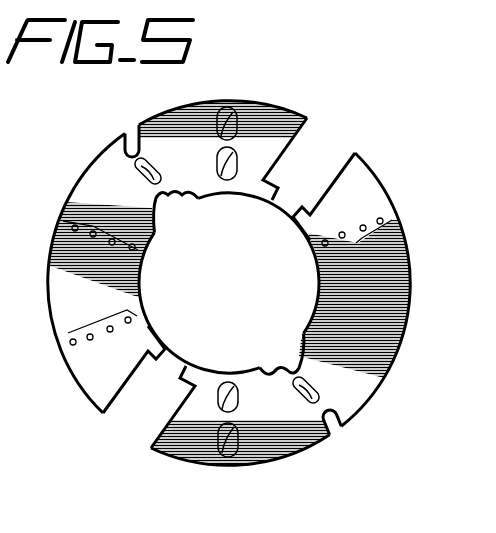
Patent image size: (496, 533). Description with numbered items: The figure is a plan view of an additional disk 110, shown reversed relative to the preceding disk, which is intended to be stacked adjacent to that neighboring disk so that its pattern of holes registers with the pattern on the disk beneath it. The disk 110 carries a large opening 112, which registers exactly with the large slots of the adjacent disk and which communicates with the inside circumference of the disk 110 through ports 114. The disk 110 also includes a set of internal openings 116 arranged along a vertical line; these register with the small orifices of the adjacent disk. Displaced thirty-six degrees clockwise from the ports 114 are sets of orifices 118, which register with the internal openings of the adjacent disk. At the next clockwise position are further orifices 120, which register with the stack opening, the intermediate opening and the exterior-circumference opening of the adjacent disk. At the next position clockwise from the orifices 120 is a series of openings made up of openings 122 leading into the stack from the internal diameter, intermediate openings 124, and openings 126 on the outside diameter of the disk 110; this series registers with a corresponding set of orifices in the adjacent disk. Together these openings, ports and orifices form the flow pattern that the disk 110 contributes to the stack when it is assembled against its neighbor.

The disk 110 is at (388, 189).
The large opening 112 is at (338, 174).
The ports 114 is at (293, 212).
The internal openings 116 is at (214, 186).
The sets of orifices 118 is at (363, 246).
The orifices 120 is at (110, 230).
The openings into the stack 122 is at (168, 200).
The intermediate openings 124 is at (147, 163).
The openings on the outside diameter 126 is at (126, 133).